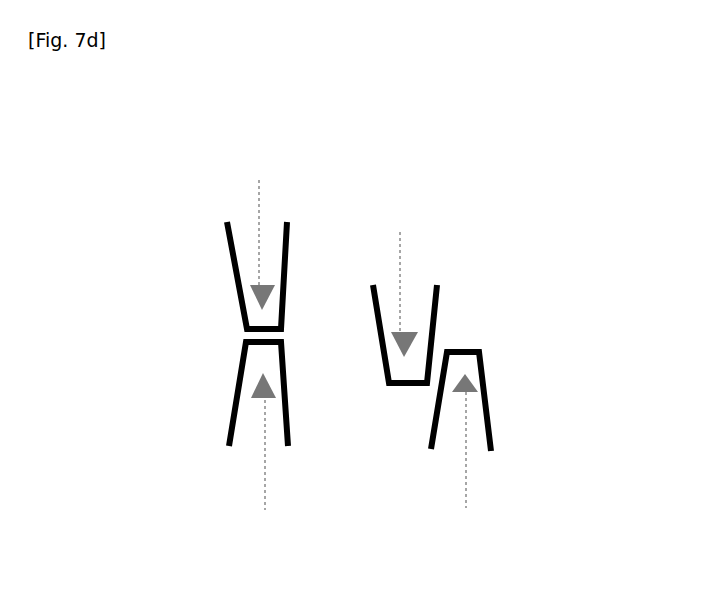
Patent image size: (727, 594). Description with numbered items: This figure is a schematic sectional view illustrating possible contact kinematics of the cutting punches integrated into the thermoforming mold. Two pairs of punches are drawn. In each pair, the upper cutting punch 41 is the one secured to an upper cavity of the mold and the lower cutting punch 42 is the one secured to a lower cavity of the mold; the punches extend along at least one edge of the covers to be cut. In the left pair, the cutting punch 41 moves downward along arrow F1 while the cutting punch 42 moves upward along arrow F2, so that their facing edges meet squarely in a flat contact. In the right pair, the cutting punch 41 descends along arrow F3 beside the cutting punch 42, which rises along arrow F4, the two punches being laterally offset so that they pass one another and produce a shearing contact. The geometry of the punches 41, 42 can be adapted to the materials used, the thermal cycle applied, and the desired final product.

The cutting punch 41 is at (272, 240).
The cutting punch 42 is at (248, 424).
The arrow F1 is at (260, 219).
The arrow F2 is at (265, 468).
The arrow F3 is at (400, 250).
The arrow F4 is at (465, 470).